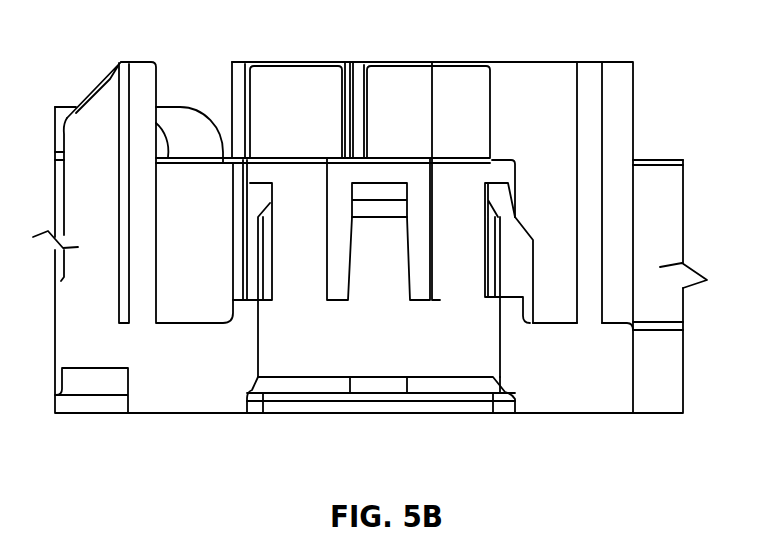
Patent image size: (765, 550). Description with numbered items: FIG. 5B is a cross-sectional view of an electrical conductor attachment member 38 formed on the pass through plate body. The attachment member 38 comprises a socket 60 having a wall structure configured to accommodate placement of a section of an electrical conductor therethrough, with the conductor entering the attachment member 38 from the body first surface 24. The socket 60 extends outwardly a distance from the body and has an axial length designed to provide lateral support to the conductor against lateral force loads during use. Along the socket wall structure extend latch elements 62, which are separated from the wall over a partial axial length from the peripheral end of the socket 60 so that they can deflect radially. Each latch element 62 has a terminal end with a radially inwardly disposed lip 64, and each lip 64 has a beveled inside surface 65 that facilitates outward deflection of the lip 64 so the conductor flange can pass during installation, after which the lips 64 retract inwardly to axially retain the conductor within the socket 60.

The first surface 24 is at (543, 415).
The attachment member 38 is at (535, 283).
The socket 60 is at (460, 193).
The latch element 62 is at (252, 253).
The lip 64 is at (270, 207).
The beveled inside surface 65 is at (368, 205).